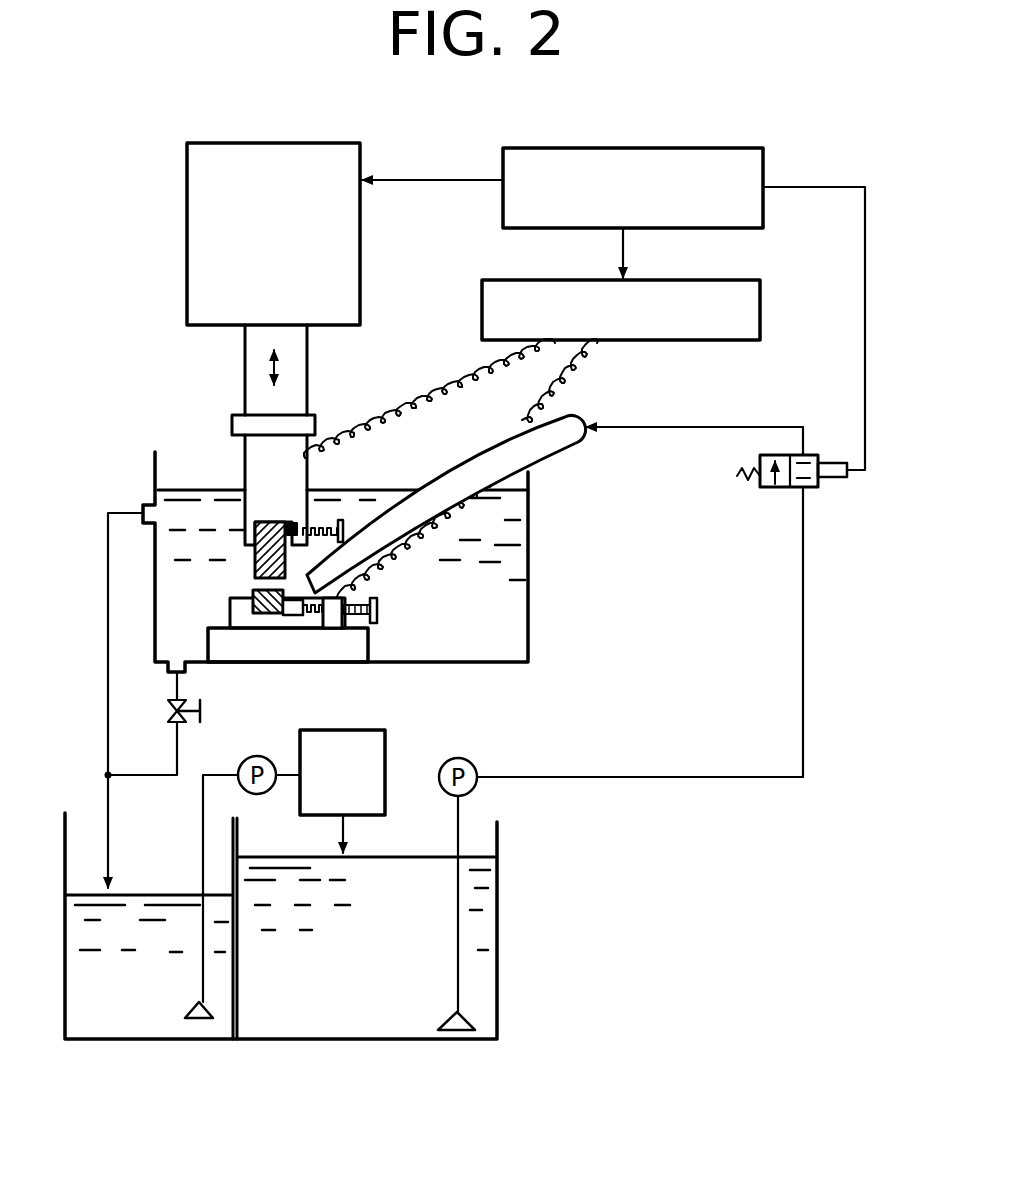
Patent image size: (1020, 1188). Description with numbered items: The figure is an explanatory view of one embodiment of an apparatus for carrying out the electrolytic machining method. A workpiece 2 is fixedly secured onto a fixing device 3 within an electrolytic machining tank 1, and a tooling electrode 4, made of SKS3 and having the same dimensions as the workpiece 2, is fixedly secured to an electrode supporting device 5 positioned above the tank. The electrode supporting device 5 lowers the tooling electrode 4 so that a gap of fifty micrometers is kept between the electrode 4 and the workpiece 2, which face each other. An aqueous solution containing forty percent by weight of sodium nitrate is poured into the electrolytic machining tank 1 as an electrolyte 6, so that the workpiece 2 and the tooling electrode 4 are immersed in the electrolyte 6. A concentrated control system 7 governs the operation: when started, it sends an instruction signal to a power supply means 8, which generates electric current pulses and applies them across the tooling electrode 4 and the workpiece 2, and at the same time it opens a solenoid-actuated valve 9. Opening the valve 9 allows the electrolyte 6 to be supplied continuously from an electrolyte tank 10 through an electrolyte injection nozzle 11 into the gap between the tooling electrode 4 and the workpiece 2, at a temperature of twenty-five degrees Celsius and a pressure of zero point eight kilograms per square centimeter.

The electrolytic machining tank 1 is at (528, 572).
The workpiece 2 is at (265, 615).
The fixing device 3 is at (322, 627).
The tooling electrode 4 is at (253, 565).
The electrode supporting device 5 is at (280, 148).
The electrolyte 6 is at (188, 488).
The concentrated control system 7 is at (636, 148).
The power supply means 8 is at (763, 300).
The solenoid-actuated valve 9 is at (812, 488).
The electrolyte tank 10 is at (483, 944).
The electrolyte injection nozzle 11 is at (368, 557).